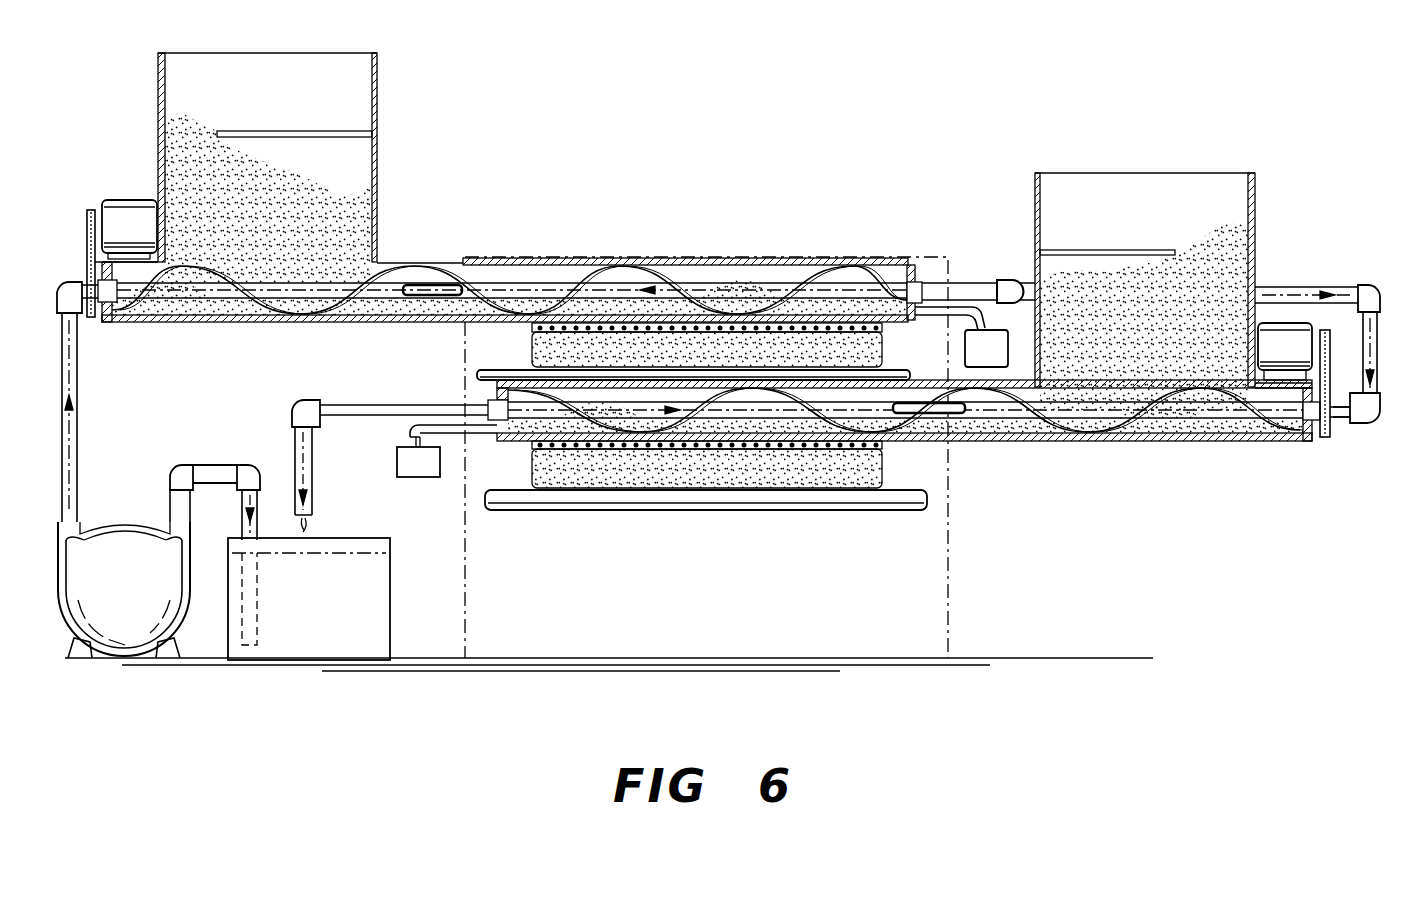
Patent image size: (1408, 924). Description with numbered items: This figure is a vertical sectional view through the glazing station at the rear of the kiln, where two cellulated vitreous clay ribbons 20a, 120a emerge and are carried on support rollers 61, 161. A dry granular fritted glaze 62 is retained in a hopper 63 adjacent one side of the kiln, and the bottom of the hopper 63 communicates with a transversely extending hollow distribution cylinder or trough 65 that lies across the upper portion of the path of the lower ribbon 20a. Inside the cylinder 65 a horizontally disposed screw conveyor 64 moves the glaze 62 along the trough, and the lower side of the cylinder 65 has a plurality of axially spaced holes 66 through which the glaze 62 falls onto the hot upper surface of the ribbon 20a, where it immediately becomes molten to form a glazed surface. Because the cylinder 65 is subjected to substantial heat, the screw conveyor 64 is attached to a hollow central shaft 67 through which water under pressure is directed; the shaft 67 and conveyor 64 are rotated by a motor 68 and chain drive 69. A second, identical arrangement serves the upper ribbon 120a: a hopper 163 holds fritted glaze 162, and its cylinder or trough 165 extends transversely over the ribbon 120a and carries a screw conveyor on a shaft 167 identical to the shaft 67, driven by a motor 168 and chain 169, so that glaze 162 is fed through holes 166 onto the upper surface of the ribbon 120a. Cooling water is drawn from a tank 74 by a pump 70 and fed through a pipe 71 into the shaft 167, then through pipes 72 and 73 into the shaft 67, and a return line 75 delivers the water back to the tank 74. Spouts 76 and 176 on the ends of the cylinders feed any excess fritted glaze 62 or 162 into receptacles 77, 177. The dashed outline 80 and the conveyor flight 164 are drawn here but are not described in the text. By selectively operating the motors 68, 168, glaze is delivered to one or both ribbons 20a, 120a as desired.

The hopper 163 is at (377, 135).
The fritted glaze 162 is at (357, 218).
The motor 168 is at (131, 200).
The chain 169 is at (94, 222).
The cylinder or trough 165 is at (428, 263).
The heating enclosure 80 is at (518, 258).
The screw conveyor flight 164 is at (618, 273).
The cellulated vitreous clay ribbon 120a is at (690, 350).
The shaft 167 is at (790, 277).
The holes 166 is at (530, 326).
The support roller 161 is at (890, 373).
The pipe 72 is at (960, 286).
The spout 176 is at (990, 318).
The receptacle 177 is at (1001, 358).
The hopper 63 is at (1255, 214).
The dry granular fritted glaze 62 is at (1240, 272).
The motor 68 is at (1312, 329).
The chain drive 69 is at (1330, 365).
The pipe 73 is at (1378, 381).
The pipe 71 is at (78, 411).
The pump 70 is at (138, 532).
The tank 74 is at (350, 604).
The return line 75 is at (294, 442).
The spout 76 is at (410, 431).
The receptacle 77 is at (418, 472).
The screw conveyor 64 is at (897, 433).
The holes 66 is at (880, 447).
The distribution cylinder 65 is at (1005, 445).
The hollow central shaft 67 is at (1028, 433).
The support roller 61 is at (735, 504).
The cellulated vitreous clay ribbon 20a is at (685, 470).